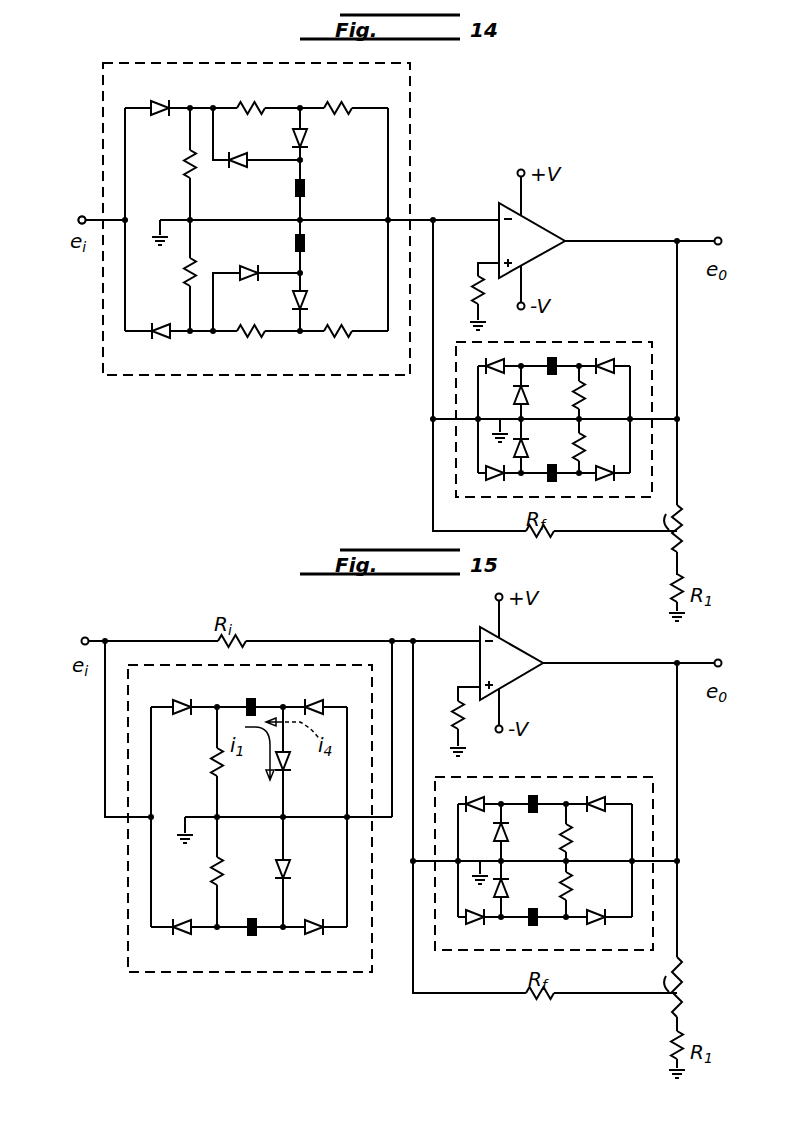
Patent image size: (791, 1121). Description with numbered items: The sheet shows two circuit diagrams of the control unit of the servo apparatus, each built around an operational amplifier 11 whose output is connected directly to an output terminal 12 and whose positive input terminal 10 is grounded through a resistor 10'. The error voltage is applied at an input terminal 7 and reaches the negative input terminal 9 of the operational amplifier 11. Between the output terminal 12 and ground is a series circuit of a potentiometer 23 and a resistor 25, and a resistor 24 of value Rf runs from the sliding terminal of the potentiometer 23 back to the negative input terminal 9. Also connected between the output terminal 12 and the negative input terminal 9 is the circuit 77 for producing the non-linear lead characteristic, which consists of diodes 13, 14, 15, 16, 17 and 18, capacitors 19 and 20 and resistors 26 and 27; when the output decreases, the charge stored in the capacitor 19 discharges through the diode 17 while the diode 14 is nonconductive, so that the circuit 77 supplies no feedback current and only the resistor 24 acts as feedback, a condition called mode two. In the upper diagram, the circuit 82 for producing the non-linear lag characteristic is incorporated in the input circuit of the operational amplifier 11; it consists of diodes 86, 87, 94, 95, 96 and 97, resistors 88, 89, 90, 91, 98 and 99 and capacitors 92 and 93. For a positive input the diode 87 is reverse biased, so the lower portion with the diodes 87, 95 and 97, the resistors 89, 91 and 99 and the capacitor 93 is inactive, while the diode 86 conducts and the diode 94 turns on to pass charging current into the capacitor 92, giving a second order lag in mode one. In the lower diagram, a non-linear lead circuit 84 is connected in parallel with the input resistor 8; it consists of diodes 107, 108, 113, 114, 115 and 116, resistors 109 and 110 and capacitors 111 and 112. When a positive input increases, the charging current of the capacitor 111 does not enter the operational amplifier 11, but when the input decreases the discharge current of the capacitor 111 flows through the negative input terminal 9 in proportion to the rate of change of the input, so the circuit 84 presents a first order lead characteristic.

In FIG. 14, the input terminal 7 is at (82, 216).
In FIG. 15, the input terminal 7 is at (85, 636).
In FIG. 15, the input resistor 8 is at (240, 633).
In FIG. 14, the negative input terminal 9 is at (493, 216).
In FIG. 15, the negative input terminal 9 is at (474, 638).
In FIG. 14, the positive input terminal 10 is at (477, 251).
In FIG. 15, the positive input terminal 10 is at (459, 676).
In FIG. 14, the resistor 10' is at (497, 306).
In FIG. 15, the resistor 10' is at (478, 734).
In FIG. 14, the operational amplifier 11 is at (545, 230).
In FIG. 15, the operational amplifier 11 is at (525, 650).
In FIG. 14, the output terminal 12 is at (718, 236).
In FIG. 15, the output terminal 12 is at (718, 658).
In FIG. 14, the diode 13 is at (608, 358).
In FIG. 15, the diode 13 is at (602, 802).
In FIG. 14, the diode 14 is at (488, 358).
In FIG. 15, the diode 14 is at (478, 802).
In FIG. 14, the diode 15 is at (610, 484).
In FIG. 15, the diode 15 is at (604, 919).
In FIG. 14, the diode 16 is at (490, 481).
In FIG. 15, the diode 16 is at (479, 919).
In FIG. 14, the diode 17 is at (526, 396).
In FIG. 15, the diode 17 is at (509, 835).
In FIG. 14, the diode 18 is at (525, 447).
In FIG. 15, the diode 18 is at (509, 882).
In FIG. 14, the capacitor 19 is at (555, 358).
In FIG. 15, the capacitor 19 is at (537, 802).
In FIG. 14, the capacitor 20 is at (558, 484).
In FIG. 15, the capacitor 20 is at (538, 919).
In FIG. 14, the potentiometer 23 is at (680, 534).
In FIG. 15, the potentiometer 23 is at (680, 996).
In FIG. 14, the resistor 24 is at (548, 538).
In FIG. 15, the resistor 24 is at (540, 1000).
In FIG. 14, the resistor 25 is at (667, 590).
In FIG. 15, the resistor 25 is at (668, 1046).
In FIG. 14, the resistor 26 is at (584, 398).
In FIG. 15, the resistor 26 is at (573, 839).
In FIG. 14, the resistor 27 is at (584, 446).
In FIG. 15, the resistor 27 is at (573, 880).
In FIG. 14, the circuit 77 is at (612, 340).
In FIG. 15, the circuit 77 is at (598, 776).
In FIG. 14, the circuit 82 is at (246, 376).
In FIG. 15, the non-linear lead circuit 84 is at (225, 975).
In FIG. 14, the diode 86 is at (160, 106).
In FIG. 14, the diode 87 is at (161, 339).
In FIG. 14, the resistor 88 is at (185, 166).
In FIG. 14, the resistor 89 is at (185, 275).
In FIG. 14, the resistor 90 is at (251, 104).
In FIG. 14, the resistor 91 is at (251, 339).
In FIG. 14, the capacitor 92 is at (308, 188).
In FIG. 14, the capacitor 93 is at (308, 243).
In FIG. 14, the diode 94 is at (308, 146).
In FIG. 14, the diode 95 is at (308, 296).
In FIG. 14, the diode 96 is at (250, 153).
In FIG. 14, the diode 97 is at (250, 265).
In FIG. 14, the resistor 98 is at (339, 104).
In FIG. 14, the resistor 99 is at (338, 339).
In FIG. 15, the diode 107 is at (182, 700).
In FIG. 15, the diode 108 is at (182, 934).
In FIG. 15, the resistor 109 is at (212, 762).
In FIG. 15, the resistor 110 is at (212, 872).
In FIG. 15, the capacitor 111 is at (251, 697).
In FIG. 15, the capacitor 112 is at (252, 935).
In FIG. 15, the diode 113 is at (315, 700).
In FIG. 15, the diode 114 is at (314, 935).
In FIG. 15, the diode 115 is at (291, 764).
In FIG. 15, the diode 116 is at (291, 868).